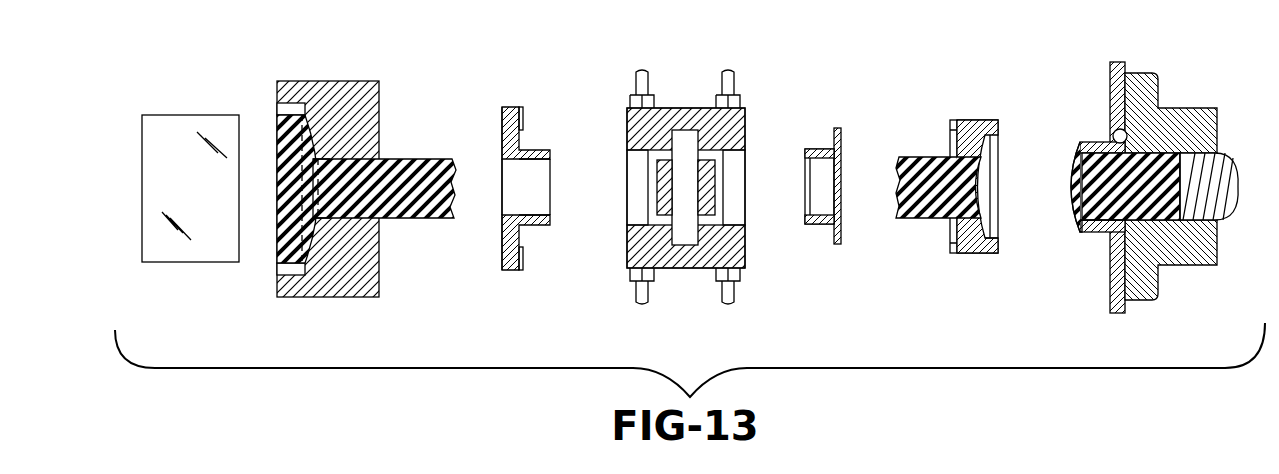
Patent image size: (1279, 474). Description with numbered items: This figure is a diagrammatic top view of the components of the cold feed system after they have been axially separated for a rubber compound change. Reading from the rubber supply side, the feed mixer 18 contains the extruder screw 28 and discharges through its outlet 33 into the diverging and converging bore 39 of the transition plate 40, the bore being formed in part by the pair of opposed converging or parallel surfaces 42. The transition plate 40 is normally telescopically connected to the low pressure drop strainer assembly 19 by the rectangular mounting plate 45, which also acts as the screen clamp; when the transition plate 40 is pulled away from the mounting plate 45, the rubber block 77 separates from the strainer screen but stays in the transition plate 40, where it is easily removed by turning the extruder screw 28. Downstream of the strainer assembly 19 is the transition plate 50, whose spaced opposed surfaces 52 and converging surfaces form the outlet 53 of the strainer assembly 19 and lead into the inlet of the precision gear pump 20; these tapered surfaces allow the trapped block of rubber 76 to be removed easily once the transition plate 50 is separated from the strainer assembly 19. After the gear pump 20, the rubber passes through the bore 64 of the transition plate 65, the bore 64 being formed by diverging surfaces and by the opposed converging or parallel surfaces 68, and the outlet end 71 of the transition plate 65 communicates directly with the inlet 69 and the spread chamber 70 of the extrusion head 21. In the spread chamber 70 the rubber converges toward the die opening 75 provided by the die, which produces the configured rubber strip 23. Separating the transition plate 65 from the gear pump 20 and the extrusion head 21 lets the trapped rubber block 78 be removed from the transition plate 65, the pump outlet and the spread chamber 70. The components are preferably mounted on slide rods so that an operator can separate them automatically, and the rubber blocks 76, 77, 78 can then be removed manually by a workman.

The feed mixer 18 is at (1198, 104).
The low pressure drop strainer assembly 19 is at (981, 118).
The precision gear pump 20 is at (635, 300).
The extrusion head 21 is at (381, 86).
The strip 23 is at (222, 248).
The extruder screw 28 is at (1235, 155).
The outlet 33 is at (1126, 132).
The diverging and converging bore 39 is at (1082, 162).
The transition plate 40 is at (1127, 312).
The converging or parallel surfaces 42 is at (1085, 210).
The mounting plate 45 is at (1000, 243).
The transition plate 50 is at (835, 130).
The opposed surfaces 52 is at (822, 166).
The outlet 53 is at (832, 212).
The bore 64 is at (535, 188).
The transition plate 65 is at (513, 103).
The converging or parallel surfaces 68 is at (553, 165).
The inlet 69 is at (362, 206).
The spread chamber 70 is at (337, 207).
The outlet end 71 is at (502, 202).
The die opening 75 is at (288, 158).
The block of rubber 76 is at (927, 170).
The rubber block 77 is at (1075, 183).
The trapped rubber block 78 is at (410, 167).